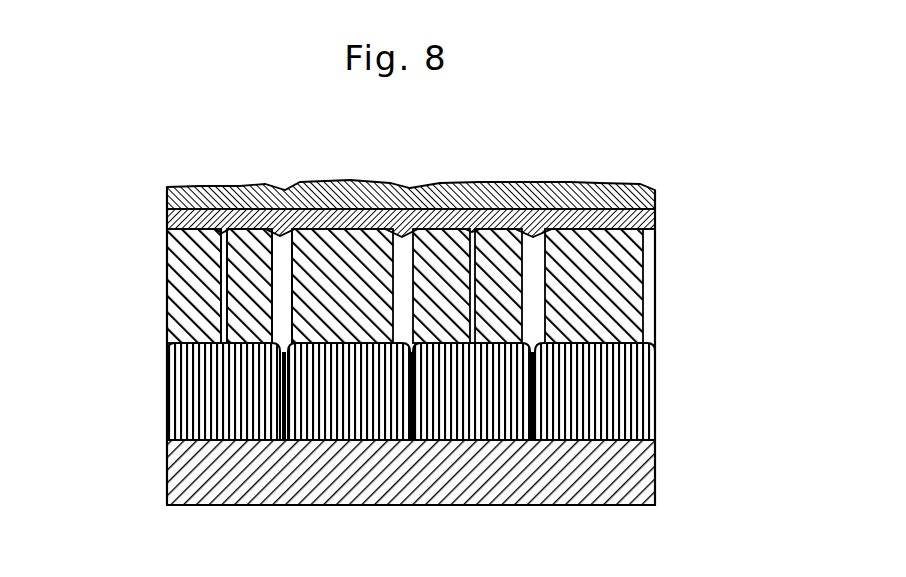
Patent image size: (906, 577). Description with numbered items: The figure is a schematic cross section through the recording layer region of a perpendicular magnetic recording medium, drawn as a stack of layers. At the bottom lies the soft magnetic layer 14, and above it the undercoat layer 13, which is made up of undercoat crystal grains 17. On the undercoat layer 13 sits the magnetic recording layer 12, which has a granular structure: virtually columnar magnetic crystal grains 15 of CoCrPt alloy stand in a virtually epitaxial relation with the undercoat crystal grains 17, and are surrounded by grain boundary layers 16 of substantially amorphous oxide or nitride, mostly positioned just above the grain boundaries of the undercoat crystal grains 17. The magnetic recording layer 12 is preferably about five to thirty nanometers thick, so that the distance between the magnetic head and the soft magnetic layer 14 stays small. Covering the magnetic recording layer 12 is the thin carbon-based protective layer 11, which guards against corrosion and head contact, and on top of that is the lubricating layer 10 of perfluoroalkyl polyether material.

The lubricating layer 10 is at (657, 190).
The protective layer 11 is at (657, 218).
The magnetic recording layer 12 is at (475, 223).
The undercoat layer 13 is at (426, 391).
The soft magnetic layer 14 is at (657, 475).
The magnetic crystal grains 15 is at (345, 257).
The grain boundary layers 16 is at (278, 270).
The undercoat crystal grains 17 is at (188, 395).